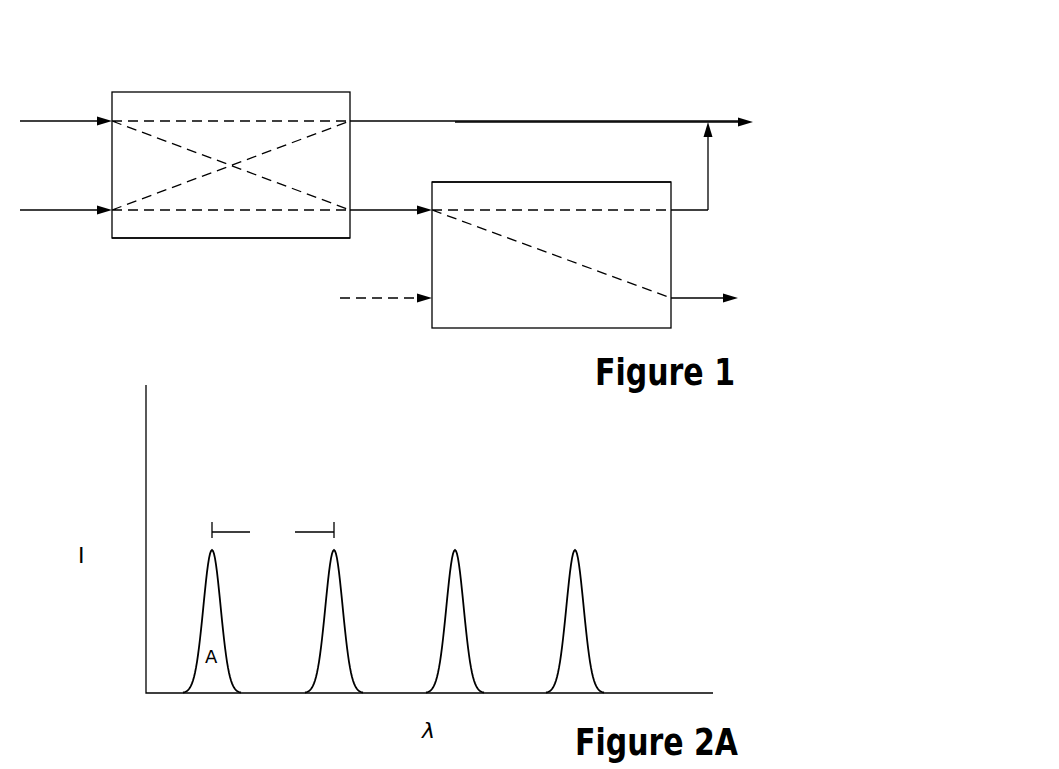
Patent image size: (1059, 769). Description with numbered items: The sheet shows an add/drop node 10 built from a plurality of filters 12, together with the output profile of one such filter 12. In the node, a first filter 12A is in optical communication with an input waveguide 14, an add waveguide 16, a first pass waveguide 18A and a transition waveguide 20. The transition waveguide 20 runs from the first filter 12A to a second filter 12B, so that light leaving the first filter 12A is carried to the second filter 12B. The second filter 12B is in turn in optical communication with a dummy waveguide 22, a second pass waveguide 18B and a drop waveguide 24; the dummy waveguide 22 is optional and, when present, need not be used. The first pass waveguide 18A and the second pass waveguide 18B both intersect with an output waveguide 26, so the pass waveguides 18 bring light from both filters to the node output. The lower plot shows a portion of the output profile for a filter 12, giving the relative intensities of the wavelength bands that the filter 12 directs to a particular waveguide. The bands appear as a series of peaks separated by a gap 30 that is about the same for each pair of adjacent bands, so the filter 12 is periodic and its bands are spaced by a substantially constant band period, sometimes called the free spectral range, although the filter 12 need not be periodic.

In FIG. 1, the add/drop node 10 is at (471, 50).
In FIG. 1, the filter 12 is at (160, 91).
In FIG. 1, the first filter 12A is at (153, 240).
In FIG. 1, the second filter 12B is at (510, 181).
In FIG. 1, the input waveguide 14 is at (73, 119).
In FIG. 1, the add waveguide 16 is at (48, 211).
In FIG. 1, the pass waveguide 18 is at (405, 120).
In FIG. 1, the first pass waveguide 18A is at (465, 120).
In FIG. 1, the second pass waveguide 18B is at (708, 180).
In FIG. 1, the transition waveguide 20 is at (398, 213).
In FIG. 1, the dummy waveguide 22 is at (377, 300).
In FIG. 1, the drop waveguide 24 is at (688, 300).
In FIG. 1, the output waveguide 26 is at (718, 120).
In FIG. 2A, the gap 30 is at (273, 532).